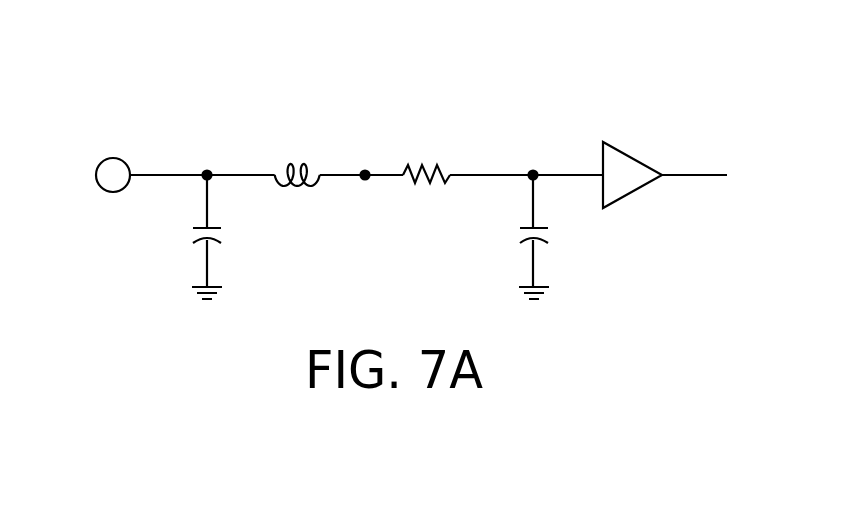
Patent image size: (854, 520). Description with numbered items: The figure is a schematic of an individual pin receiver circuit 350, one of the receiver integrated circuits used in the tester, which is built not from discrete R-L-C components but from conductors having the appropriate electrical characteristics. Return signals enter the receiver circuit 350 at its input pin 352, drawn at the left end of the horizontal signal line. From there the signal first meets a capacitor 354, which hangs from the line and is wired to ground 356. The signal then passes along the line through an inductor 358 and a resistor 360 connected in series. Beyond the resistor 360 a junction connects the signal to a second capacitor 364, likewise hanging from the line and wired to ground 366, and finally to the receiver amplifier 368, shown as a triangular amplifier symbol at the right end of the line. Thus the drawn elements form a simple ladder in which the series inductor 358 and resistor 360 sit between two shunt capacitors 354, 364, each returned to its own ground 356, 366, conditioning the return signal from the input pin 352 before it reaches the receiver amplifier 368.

The receiver circuit 350 is at (381, 74).
The input pin 352 is at (110, 188).
The capacitor 354 is at (192, 234).
The ground 356 is at (198, 292).
The inductor 358 is at (312, 186).
The resistor 360 is at (424, 184).
The second capacitor 364 is at (549, 233).
The ground 366 is at (549, 294).
The receiver amplifier 368 is at (632, 184).